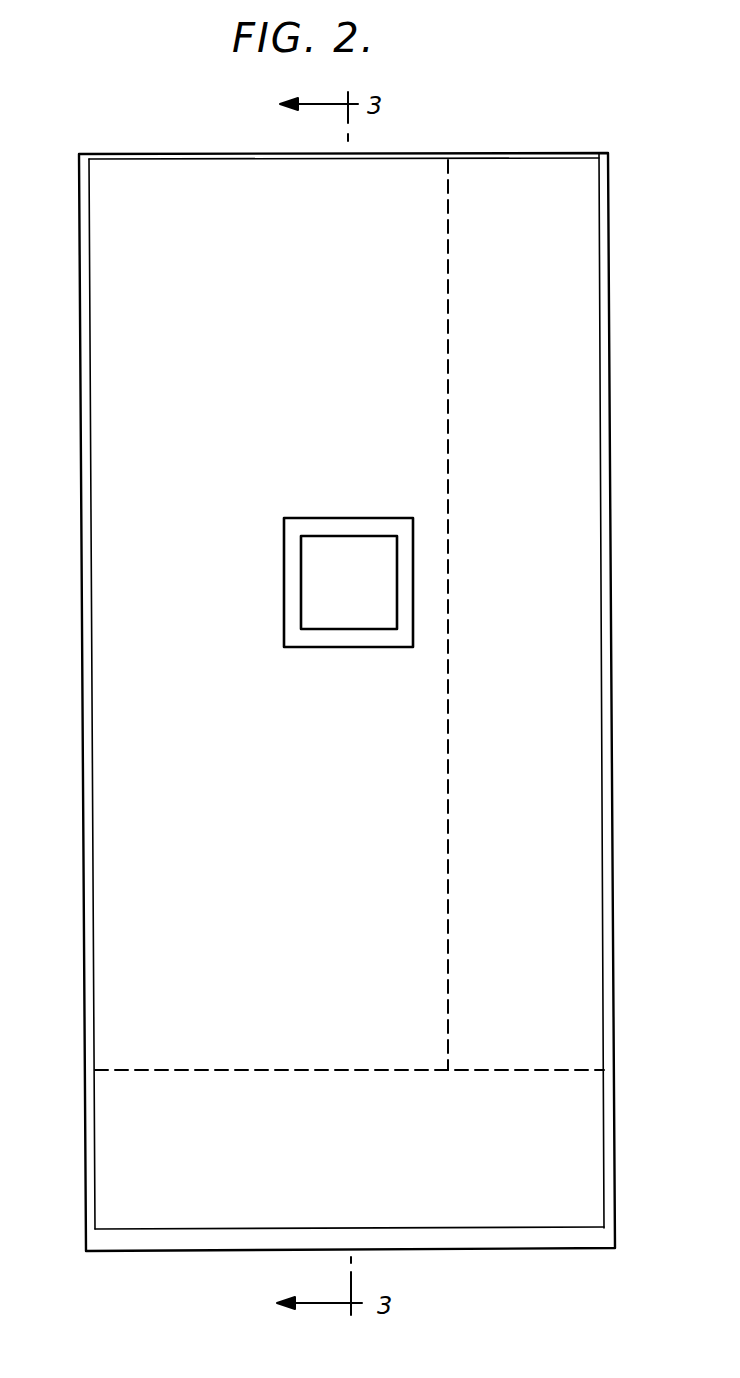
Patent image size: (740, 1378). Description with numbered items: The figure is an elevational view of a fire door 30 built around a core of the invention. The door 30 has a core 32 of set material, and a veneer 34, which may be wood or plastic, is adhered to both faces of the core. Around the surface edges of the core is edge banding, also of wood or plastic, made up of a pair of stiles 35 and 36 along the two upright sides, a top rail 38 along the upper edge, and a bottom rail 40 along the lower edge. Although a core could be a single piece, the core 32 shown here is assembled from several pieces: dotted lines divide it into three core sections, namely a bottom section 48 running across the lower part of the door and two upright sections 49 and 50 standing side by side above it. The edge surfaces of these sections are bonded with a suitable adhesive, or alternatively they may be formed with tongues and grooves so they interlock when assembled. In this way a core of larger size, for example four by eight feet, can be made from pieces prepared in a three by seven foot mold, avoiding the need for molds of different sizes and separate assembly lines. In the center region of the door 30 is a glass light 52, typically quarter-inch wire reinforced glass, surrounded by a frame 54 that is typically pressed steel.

The door 30 is at (616, 309).
The core 32 is at (378, 203).
The veneer 34 is at (567, 242).
The stile 35 is at (608, 515).
The stile 36 is at (80, 294).
The top rail 38 is at (113, 152).
The bottom rail 40 is at (187, 1241).
The bottom section 48 is at (555, 1165).
The upright section 49 is at (158, 767).
The upright section 50 is at (540, 955).
The glass light 52 is at (380, 552).
The frame 54 is at (405, 626).